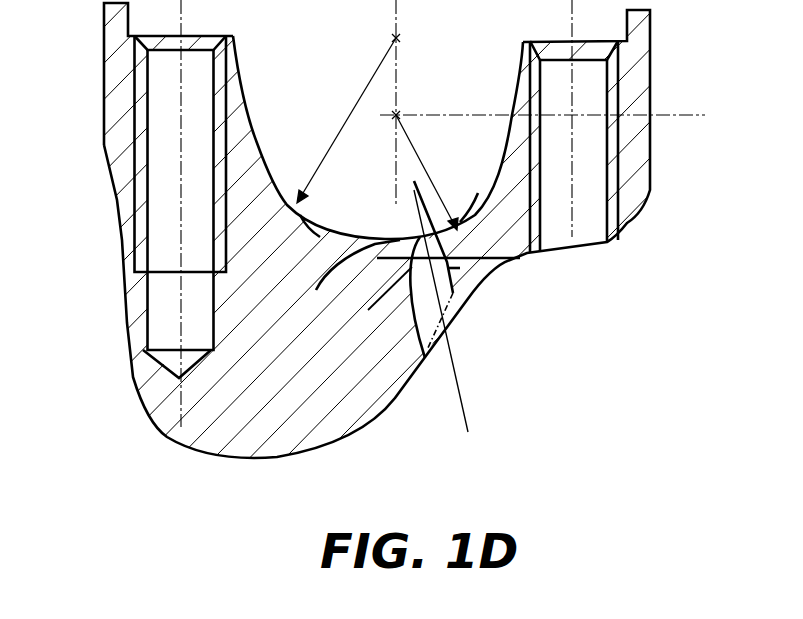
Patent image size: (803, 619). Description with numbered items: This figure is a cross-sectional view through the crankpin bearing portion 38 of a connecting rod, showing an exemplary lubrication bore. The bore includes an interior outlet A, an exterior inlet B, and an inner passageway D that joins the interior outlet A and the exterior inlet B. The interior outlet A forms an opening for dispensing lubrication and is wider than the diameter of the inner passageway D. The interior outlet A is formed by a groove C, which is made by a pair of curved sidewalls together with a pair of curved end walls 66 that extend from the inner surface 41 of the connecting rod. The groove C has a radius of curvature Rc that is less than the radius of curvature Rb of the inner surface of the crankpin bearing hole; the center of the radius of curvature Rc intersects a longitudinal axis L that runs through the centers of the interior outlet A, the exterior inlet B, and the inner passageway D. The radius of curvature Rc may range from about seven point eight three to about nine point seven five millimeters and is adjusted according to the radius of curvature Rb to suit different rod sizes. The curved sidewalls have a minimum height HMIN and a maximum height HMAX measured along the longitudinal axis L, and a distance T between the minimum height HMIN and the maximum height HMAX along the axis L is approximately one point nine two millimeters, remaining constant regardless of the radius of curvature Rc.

The crankpin bearing portion 38 is at (383, 378).
The inner surface 41 is at (253, 145).
The curved end walls 66 is at (462, 220).
The radius of curvature of the inner surface of the crankpin bearing hole Rb is at (356, 103).
The radius of curvature of the groove Rc is at (434, 187).
The interior outlet A is at (409, 171).
The exterior inlet B is at (463, 312).
The groove C is at (403, 252).
The inner passageway D is at (457, 268).
The distance T is at (380, 300).
The longitudinal axis L is at (463, 400).
The maximum height HMAX is at (418, 240).
The minimum height HMIN is at (510, 260).